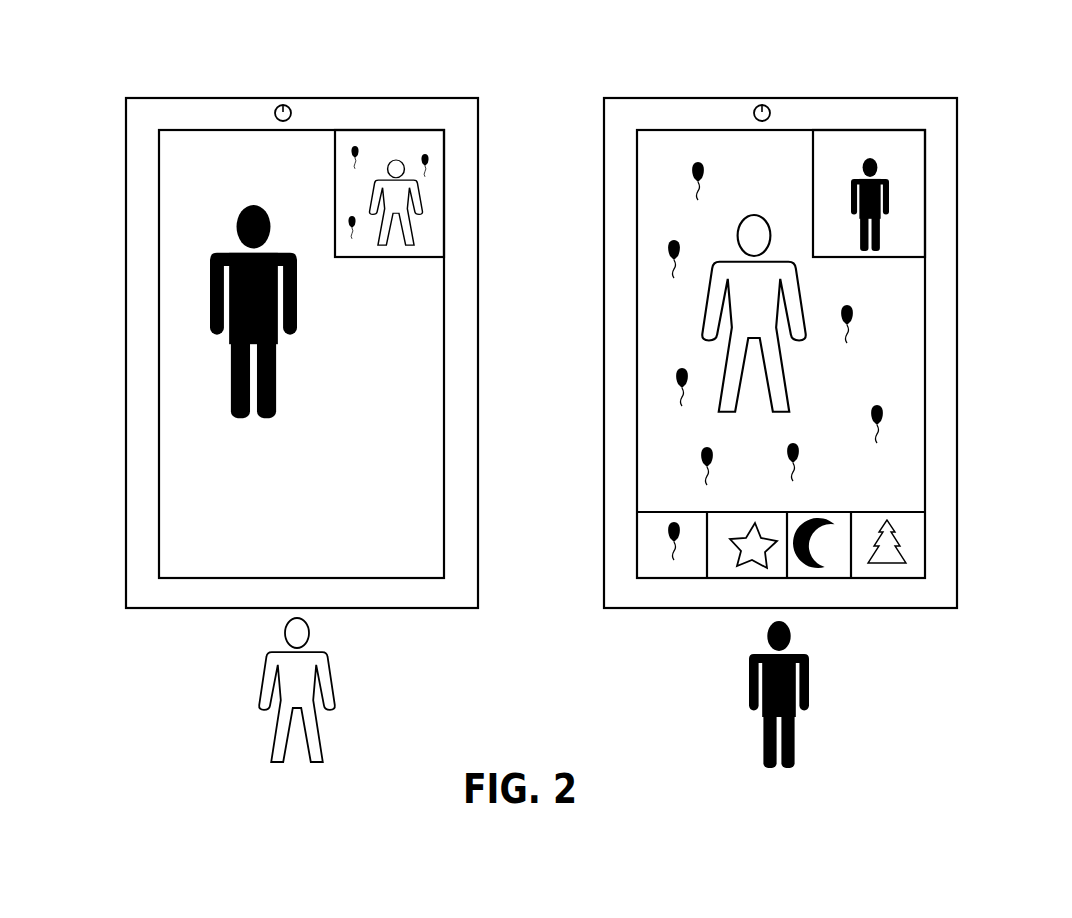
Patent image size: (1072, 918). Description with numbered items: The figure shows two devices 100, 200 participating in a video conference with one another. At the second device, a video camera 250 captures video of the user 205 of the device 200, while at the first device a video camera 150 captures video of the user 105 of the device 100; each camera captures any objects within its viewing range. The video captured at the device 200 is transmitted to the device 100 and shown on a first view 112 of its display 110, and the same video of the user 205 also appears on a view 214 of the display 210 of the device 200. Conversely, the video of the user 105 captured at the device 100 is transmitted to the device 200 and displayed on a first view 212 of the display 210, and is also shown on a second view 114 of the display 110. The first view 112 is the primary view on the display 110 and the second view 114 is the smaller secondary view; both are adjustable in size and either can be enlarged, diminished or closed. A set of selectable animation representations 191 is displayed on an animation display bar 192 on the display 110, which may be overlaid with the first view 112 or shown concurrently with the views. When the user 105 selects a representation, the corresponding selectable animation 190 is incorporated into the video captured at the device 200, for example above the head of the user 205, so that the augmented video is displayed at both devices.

The device 100 is at (703, 348).
The user 105 is at (765, 793).
The display 110 is at (697, 128).
The first view 112 is at (905, 306).
The second view 114 is at (907, 240).
The video camera 150 is at (758, 107).
The selectable animation 190 is at (420, 147).
The set of selectable animation representations 191 is at (830, 497).
The animation display bar 192 is at (915, 557).
The device 200 is at (336, 311).
The user 205 is at (283, 793).
The display 210 is at (211, 129).
The first view 212 is at (422, 327).
The view 214 is at (422, 235).
The video camera 250 is at (281, 106).